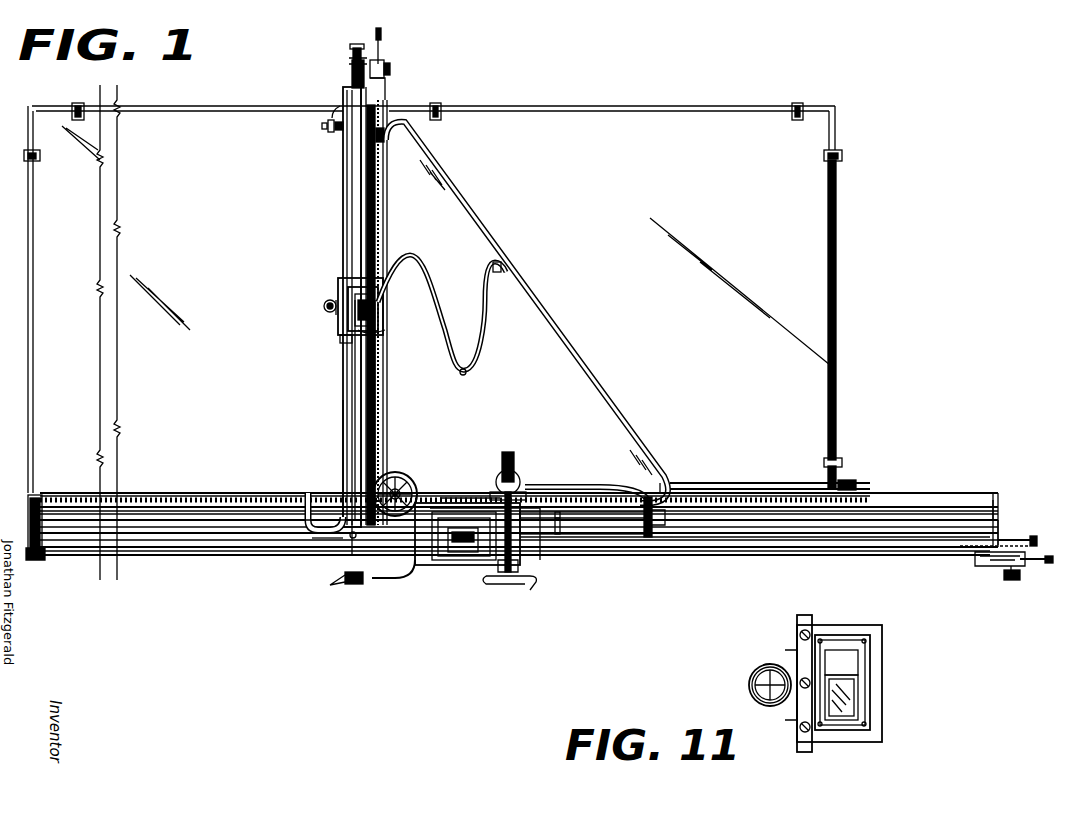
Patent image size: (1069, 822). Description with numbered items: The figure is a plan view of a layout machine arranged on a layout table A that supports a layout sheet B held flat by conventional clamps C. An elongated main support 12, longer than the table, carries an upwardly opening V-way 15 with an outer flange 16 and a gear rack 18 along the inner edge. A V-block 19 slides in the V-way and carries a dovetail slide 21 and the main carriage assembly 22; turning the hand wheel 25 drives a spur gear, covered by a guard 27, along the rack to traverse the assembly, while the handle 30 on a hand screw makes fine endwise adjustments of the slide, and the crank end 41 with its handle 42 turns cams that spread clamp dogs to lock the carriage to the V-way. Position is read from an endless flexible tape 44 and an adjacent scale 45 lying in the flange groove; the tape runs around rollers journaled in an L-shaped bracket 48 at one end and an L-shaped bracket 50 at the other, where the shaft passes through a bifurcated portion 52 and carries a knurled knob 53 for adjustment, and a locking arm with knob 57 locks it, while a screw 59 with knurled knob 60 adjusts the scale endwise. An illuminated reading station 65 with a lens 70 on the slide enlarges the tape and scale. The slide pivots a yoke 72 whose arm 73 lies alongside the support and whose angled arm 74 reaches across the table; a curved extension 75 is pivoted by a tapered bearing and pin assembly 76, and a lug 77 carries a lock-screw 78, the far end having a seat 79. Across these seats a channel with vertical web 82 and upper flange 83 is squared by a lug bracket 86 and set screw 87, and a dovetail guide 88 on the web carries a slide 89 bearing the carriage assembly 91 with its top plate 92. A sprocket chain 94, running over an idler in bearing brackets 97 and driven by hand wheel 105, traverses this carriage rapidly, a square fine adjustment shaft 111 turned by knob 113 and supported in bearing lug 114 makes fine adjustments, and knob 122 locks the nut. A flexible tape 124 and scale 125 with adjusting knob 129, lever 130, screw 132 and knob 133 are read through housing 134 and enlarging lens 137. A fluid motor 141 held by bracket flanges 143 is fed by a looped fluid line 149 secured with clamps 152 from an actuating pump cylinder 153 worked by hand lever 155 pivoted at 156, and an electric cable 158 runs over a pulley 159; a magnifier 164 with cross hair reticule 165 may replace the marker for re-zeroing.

In FIG. 1, the main support 12 is at (230, 572).
In FIG. 1, the V-way 15 is at (172, 515).
In FIG. 1, the flange 16 is at (178, 533).
In FIG. 1, the gear rack 18 is at (272, 496).
In FIG. 1, the V-block 19 is at (318, 542).
In FIG. 1, the dovetail slide 21 is at (612, 524).
In FIG. 1, the main carriage assembly 22 is at (414, 566).
In FIG. 1, the hand wheel 25 is at (512, 586).
In FIG. 1, the guard 27 is at (486, 500).
In FIG. 1, the handle 30 is at (560, 530).
In FIG. 1, the crank end 41 is at (398, 580).
In FIG. 1, the handle 42 is at (362, 588).
In FIG. 1, the endless flexible tape 44 is at (70, 560).
In FIG. 1, the scale 45 is at (688, 540).
In FIG. 1, the L-shaped bracket 48 is at (36, 528).
In FIG. 1, the L-shaped bracket 50 is at (994, 516).
In FIG. 1, the bifurcated portion 52 is at (994, 568).
In FIG. 1, the knurled knob 53 is at (1010, 582).
In FIG. 1, the knob 57 is at (1042, 566).
In FIG. 1, the screw 59 is at (1008, 538).
In FIG. 1, the knurled knob 60 is at (1035, 536).
In FIG. 1, the reading station 65 is at (456, 566).
In FIG. 1, the lens 70 is at (474, 556).
In FIG. 1, the yoke 72 is at (484, 220).
In FIG. 1, the arm 73 is at (572, 487).
In FIG. 1, the arm 74 is at (550, 318).
In FIG. 1, the curved extension 75 is at (328, 490).
In FIG. 1, the tapered bearing and pin assembly 76 is at (300, 548).
In FIG. 1, the lug 77 is at (650, 540).
In FIG. 1, the lock-screw 78 is at (680, 490).
In FIG. 1, the seat 79 is at (374, 120).
In FIG. 1, the web 82 is at (350, 220).
In FIG. 1, the upper flange 83 is at (352, 176).
In FIG. 1, the lug bracket 86 is at (340, 133).
In FIG. 1, the set screw 87 is at (326, 122).
In FIG. 1, the dovetail guide 88 is at (343, 396).
In FIG. 1, the slide 89 is at (340, 344).
In FIG. 11, the slide 89 is at (812, 614).
In FIG. 1, the carriage assembly 91 is at (336, 282).
In FIG. 11, the carriage assembly 91 is at (850, 624).
In FIG. 1, the top plate 92 is at (385, 280).
In FIG. 11, the top plate 92 is at (872, 650).
In FIG. 1, the sprocket chain 94 is at (380, 406).
In FIG. 1, the bearing brackets 97 is at (396, 134).
In FIG. 1, the hand wheel 105 is at (408, 476).
In FIG. 1, the fine adjustment shaft 111 is at (378, 382).
In FIG. 1, the knob 113 is at (368, 552).
In FIG. 1, the bearing lug 114 is at (386, 172).
In FIG. 1, the knob 122 is at (352, 542).
In FIG. 1, the flexible tape 124 is at (380, 436).
In FIG. 1, the scale 125 is at (352, 434).
In FIG. 1, the knob 129 is at (392, 66).
In FIG. 1, the lever 130 is at (383, 46).
In FIG. 1, the screw 132 is at (352, 64).
In FIG. 1, the knob 133 is at (357, 46).
In FIG. 1, the housing 134 is at (380, 290).
In FIG. 1, the enlarging lens 137 is at (380, 330).
In FIG. 11, the enlarging lens 137 is at (858, 695).
In FIG. 1, the fluid motor 141 is at (324, 306).
In FIG. 1, the bracket flanges 143 is at (334, 326).
In FIG. 1, the flexible fluid line 149 is at (470, 372).
In FIG. 1, the clamps 152 is at (505, 266).
In FIG. 1, the actuating pump cylinder 153 is at (516, 470).
In FIG. 1, the hand lever 155 is at (520, 562).
In FIG. 1, the pivot 156 is at (508, 452).
In FIG. 1, the electric cable 158 is at (385, 312).
In FIG. 1, the pulley 159 is at (858, 484).
In FIG. 11, the magnifier 164 is at (748, 684).
In FIG. 11, the cross hair reticule 165 is at (756, 700).
In FIG. 1, the layout table A is at (636, 108).
In FIG. 1, the layout sheet B is at (550, 113).
In FIG. 1, the clamps C is at (75, 108).